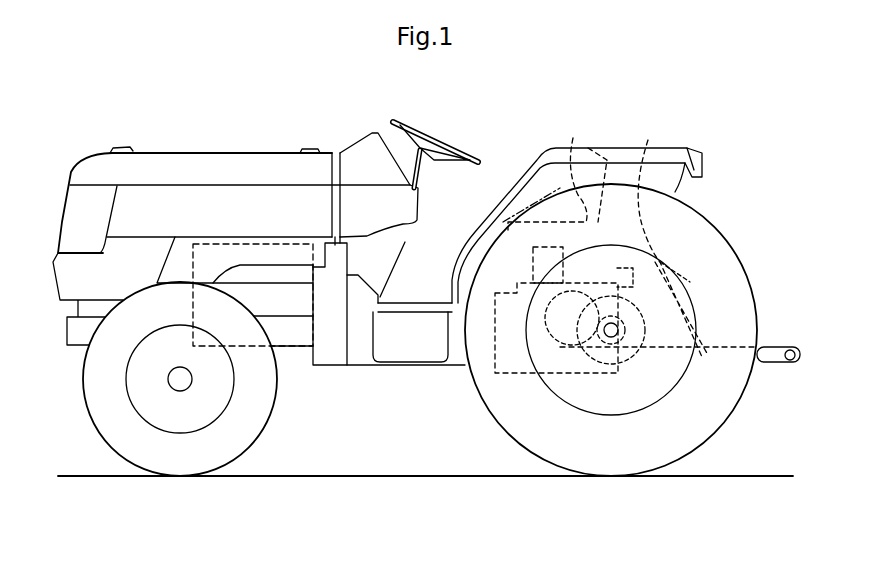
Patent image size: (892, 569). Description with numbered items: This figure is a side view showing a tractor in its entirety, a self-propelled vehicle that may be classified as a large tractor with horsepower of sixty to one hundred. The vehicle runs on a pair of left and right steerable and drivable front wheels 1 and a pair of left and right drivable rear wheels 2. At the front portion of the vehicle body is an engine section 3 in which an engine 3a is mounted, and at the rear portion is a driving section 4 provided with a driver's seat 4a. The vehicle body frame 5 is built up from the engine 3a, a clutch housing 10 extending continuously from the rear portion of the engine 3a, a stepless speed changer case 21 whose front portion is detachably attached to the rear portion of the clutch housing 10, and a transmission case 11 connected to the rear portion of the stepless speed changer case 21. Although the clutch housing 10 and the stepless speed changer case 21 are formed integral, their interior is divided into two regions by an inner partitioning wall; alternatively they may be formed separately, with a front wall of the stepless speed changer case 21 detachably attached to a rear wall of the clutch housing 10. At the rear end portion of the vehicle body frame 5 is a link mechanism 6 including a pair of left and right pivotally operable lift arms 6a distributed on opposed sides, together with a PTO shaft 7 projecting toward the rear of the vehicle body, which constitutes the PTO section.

The front wheels 1 is at (181, 450).
The rear wheels 2 is at (618, 443).
The engine section 3 is at (203, 150).
The engine 3a is at (252, 243).
The driving section 4 is at (480, 106).
The driver's seat 4a is at (573, 138).
The vehicle body frame 5 is at (70, 350).
The link mechanism 6 is at (772, 343).
The lift arms 6a is at (673, 239).
The PTO shaft 7 is at (688, 285).
The clutch housing 10 is at (331, 357).
The transmission case 11 is at (458, 358).
The stepless speed changer case 21 is at (364, 356).